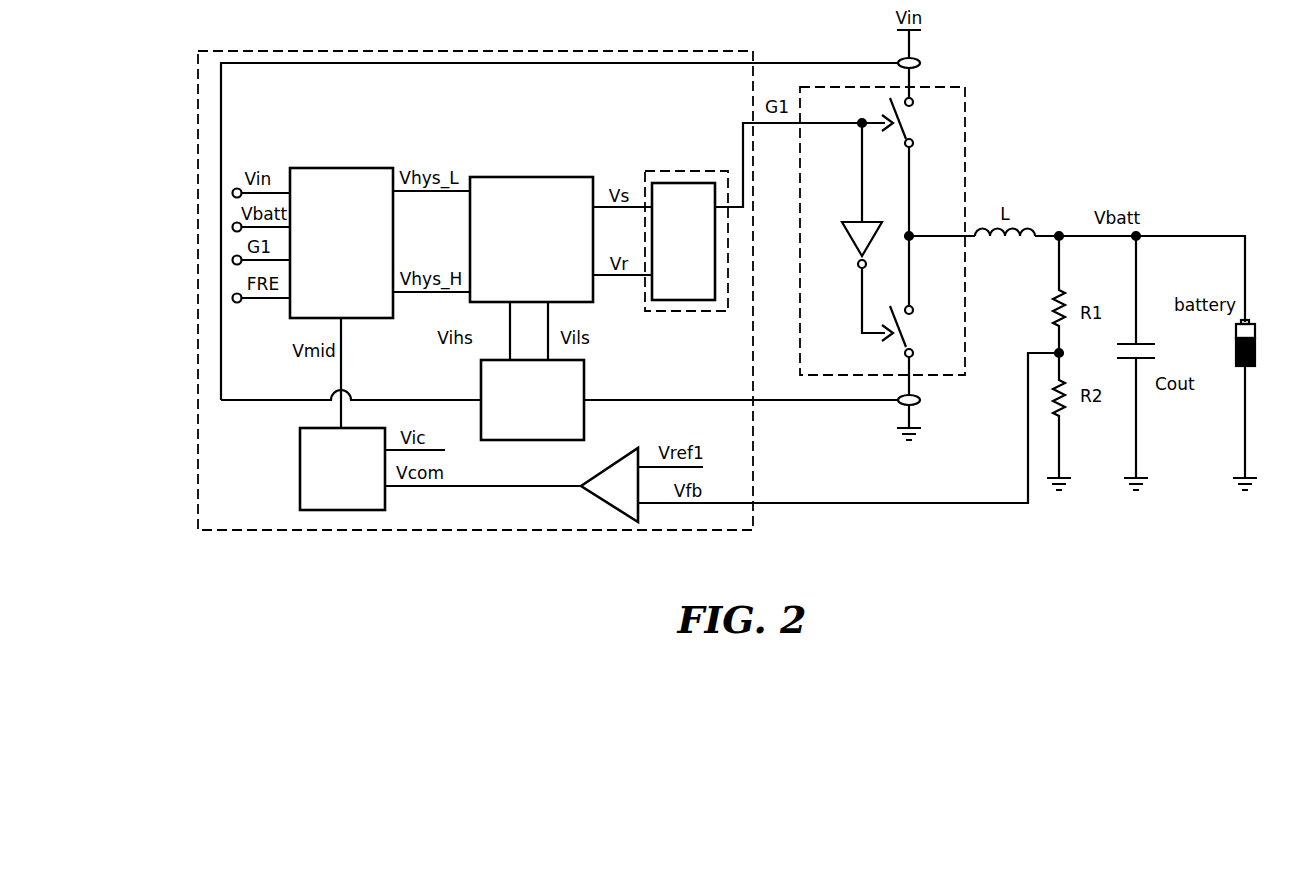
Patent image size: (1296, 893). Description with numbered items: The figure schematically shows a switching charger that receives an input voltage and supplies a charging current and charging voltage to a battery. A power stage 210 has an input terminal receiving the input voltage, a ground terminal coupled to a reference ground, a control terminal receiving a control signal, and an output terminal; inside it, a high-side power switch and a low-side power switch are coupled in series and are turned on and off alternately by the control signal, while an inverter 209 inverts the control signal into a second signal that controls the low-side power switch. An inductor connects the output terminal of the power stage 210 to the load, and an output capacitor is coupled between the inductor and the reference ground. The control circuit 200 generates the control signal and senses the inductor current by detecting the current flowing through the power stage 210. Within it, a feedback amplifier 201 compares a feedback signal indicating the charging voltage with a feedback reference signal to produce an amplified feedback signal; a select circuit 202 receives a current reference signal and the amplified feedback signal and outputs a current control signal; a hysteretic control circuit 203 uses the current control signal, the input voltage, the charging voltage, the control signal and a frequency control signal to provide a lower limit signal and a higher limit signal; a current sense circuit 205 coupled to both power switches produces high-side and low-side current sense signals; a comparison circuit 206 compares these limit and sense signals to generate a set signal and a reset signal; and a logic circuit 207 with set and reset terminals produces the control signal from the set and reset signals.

The control circuit 200 is at (258, 51).
The feedback amplifier 201 is at (628, 451).
The select circuit 202 is at (300, 473).
The hysteretic control circuit 203 is at (335, 168).
The current sense circuit 205 is at (584, 389).
The comparison circuit 206 is at (497, 177).
The logic circuit 207 is at (672, 171).
The inverter 209 is at (851, 248).
The power stage 210 is at (957, 87).